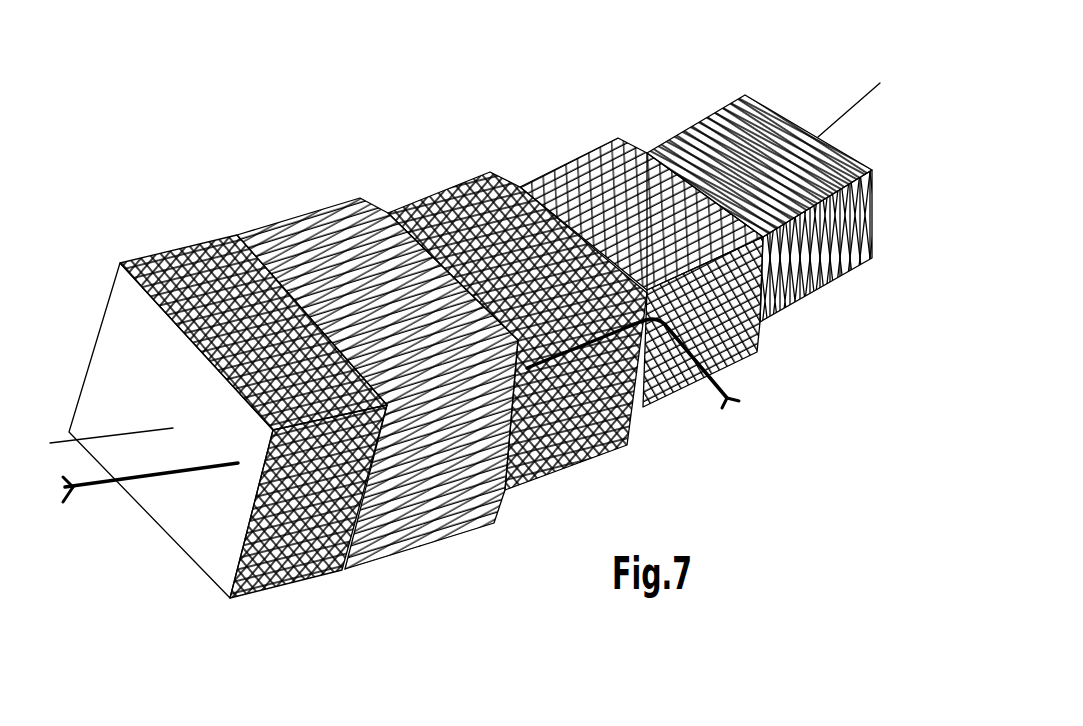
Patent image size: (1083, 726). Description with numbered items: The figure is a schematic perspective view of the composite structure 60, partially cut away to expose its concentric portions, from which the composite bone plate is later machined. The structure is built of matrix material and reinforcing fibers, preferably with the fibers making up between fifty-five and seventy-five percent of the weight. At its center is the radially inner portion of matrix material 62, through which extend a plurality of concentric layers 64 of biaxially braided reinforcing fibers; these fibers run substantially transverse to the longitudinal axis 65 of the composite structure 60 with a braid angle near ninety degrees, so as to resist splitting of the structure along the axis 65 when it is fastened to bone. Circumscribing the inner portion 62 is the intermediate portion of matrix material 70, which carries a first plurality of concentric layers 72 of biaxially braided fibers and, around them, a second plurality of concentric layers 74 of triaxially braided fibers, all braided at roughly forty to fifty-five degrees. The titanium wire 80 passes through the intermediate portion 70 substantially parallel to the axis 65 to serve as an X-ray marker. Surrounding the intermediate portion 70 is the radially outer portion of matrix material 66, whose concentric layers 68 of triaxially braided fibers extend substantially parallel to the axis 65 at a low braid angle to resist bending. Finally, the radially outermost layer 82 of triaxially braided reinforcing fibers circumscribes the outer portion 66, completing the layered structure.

The composite structure 60 is at (465, 322).
The radially inner portion of matrix material 62 is at (832, 292).
The concentric layers of biaxially braided reinforcing fibers 64 is at (735, 135).
The longitudinal axis 65 is at (112, 433).
The radially outer portion of matrix material 66 is at (293, 205).
The concentric layers of triaxially braided reinforcing fibers 68 is at (357, 227).
The intermediate portion of matrix material 70 is at (650, 460).
The first plurality of concentric layers 72 is at (737, 362).
The second plurality of concentric layers 74 is at (558, 470).
The titanium wire 80 is at (583, 346).
The radially outermost layer 82 is at (233, 300).